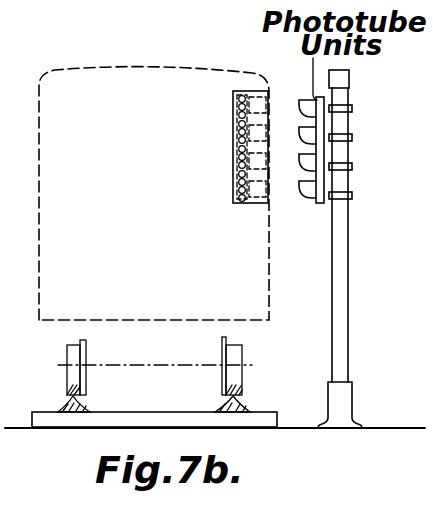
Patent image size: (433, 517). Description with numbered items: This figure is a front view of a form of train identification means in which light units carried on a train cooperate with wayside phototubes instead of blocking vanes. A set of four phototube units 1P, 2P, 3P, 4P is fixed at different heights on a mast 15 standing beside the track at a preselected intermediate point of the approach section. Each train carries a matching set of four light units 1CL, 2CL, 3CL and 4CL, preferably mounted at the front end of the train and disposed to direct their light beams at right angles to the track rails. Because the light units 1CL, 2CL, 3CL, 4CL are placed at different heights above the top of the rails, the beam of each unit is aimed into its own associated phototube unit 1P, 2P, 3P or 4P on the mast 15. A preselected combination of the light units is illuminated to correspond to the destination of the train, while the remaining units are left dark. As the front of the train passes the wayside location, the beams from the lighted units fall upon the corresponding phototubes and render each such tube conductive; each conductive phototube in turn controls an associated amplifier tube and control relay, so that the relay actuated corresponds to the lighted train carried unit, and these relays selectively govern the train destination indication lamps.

The train carried light unit 1CL is at (298, 107).
The train carried light unit 2CL is at (298, 134).
The train carried light unit 3CL is at (298, 161).
The train carried light unit 4CL is at (298, 188).
The phototube unit 1P is at (322, 105).
The phototube unit 2P is at (322, 137).
The phototube unit 3P is at (322, 168).
The phototube unit 4P is at (322, 196).
The mast 15 is at (347, 302).